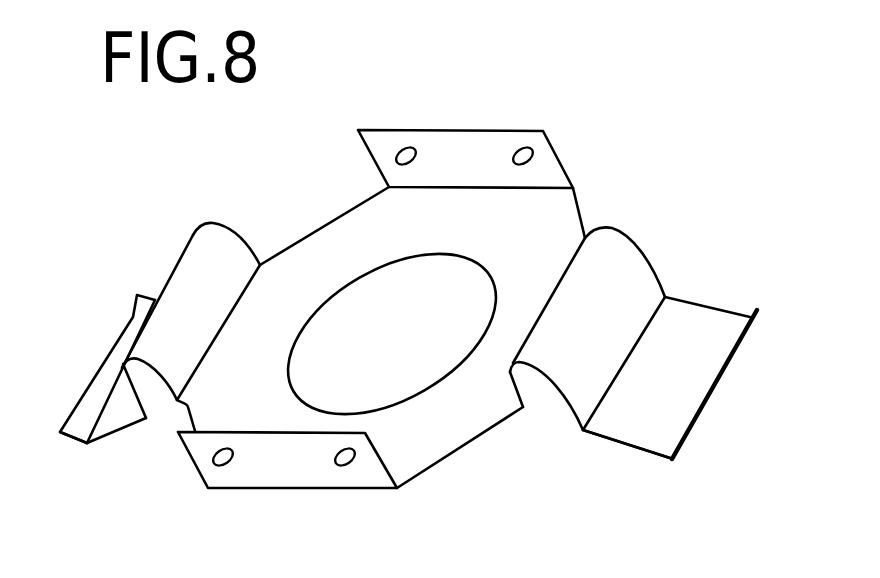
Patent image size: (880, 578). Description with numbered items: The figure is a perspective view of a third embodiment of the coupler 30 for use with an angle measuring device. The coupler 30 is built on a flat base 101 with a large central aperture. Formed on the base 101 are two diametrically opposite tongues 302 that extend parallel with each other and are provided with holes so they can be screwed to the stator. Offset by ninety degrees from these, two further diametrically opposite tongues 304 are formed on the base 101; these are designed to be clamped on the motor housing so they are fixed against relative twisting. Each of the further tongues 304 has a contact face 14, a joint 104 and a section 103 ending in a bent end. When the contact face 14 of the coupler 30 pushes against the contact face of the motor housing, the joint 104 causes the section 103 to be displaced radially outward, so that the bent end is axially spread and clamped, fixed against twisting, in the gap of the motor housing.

The coupler 30 is at (303, 210).
The base 101 is at (462, 405).
The tongues 302 is at (472, 152).
The further tongues 304 is at (183, 262).
The section 103 is at (118, 407).
The contact face 14 is at (87, 447).
The joint 104 is at (146, 422).